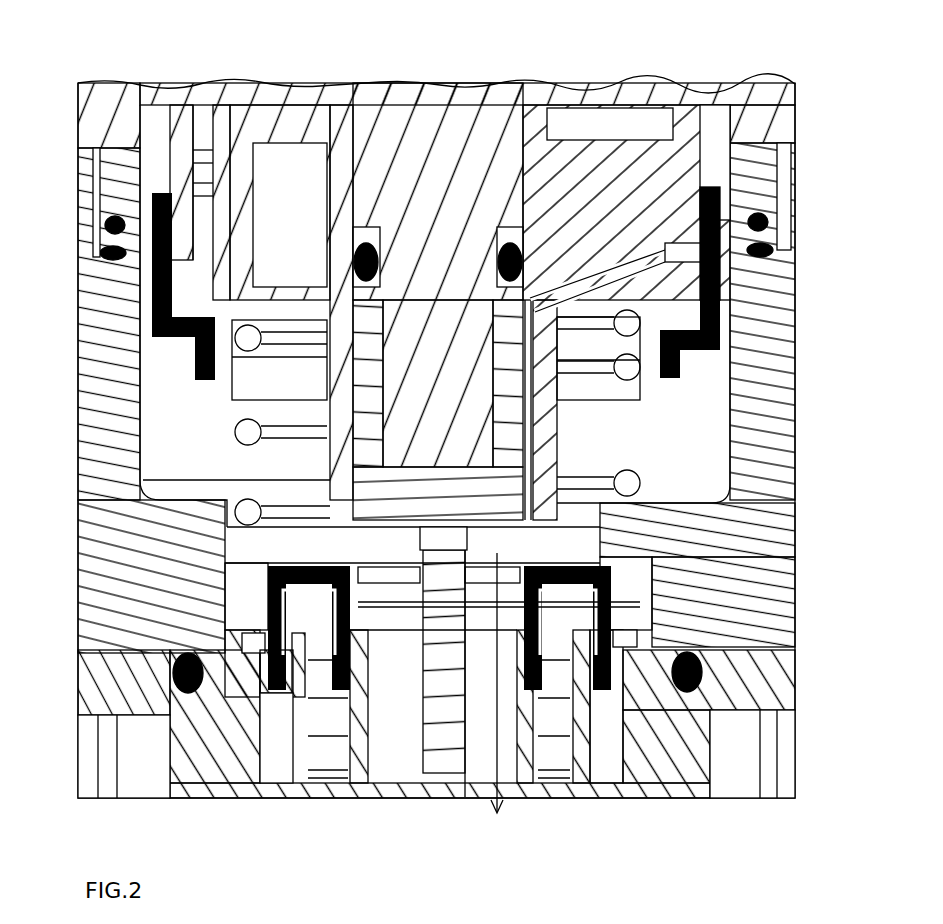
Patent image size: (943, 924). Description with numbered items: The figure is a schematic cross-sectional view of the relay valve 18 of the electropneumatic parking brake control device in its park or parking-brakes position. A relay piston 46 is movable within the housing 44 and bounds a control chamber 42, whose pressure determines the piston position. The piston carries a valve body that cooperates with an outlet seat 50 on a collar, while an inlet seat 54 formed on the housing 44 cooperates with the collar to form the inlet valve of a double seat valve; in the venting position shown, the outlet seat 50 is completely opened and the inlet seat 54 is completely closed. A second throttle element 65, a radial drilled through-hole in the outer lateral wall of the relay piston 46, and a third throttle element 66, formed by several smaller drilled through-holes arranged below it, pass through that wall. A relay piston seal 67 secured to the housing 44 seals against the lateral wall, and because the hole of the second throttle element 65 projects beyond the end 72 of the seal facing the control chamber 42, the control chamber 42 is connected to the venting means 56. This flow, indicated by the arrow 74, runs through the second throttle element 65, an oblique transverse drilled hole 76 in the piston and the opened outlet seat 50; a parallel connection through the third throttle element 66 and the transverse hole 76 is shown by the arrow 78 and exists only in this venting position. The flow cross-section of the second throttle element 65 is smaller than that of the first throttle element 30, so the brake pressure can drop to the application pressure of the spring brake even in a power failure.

The relay valve 18 is at (786, 73).
The first throttle element 30 is at (292, 300).
The control chamber 42 is at (152, 112).
The housing 44 is at (100, 433).
The relay piston 46 is at (356, 225).
The outlet seat 50 is at (710, 530).
The inlet seat 54 is at (282, 556).
The venting means 56 is at (474, 810).
The second throttle element 65 is at (194, 161).
The third throttle element 66 is at (194, 194).
The relay piston seal 67 is at (165, 302).
The end of the relay piston seal 72 is at (108, 224).
The arrow 74 is at (284, 312).
The oblique transverse drilled hole 76 is at (560, 284).
The arrow 78 is at (291, 312).